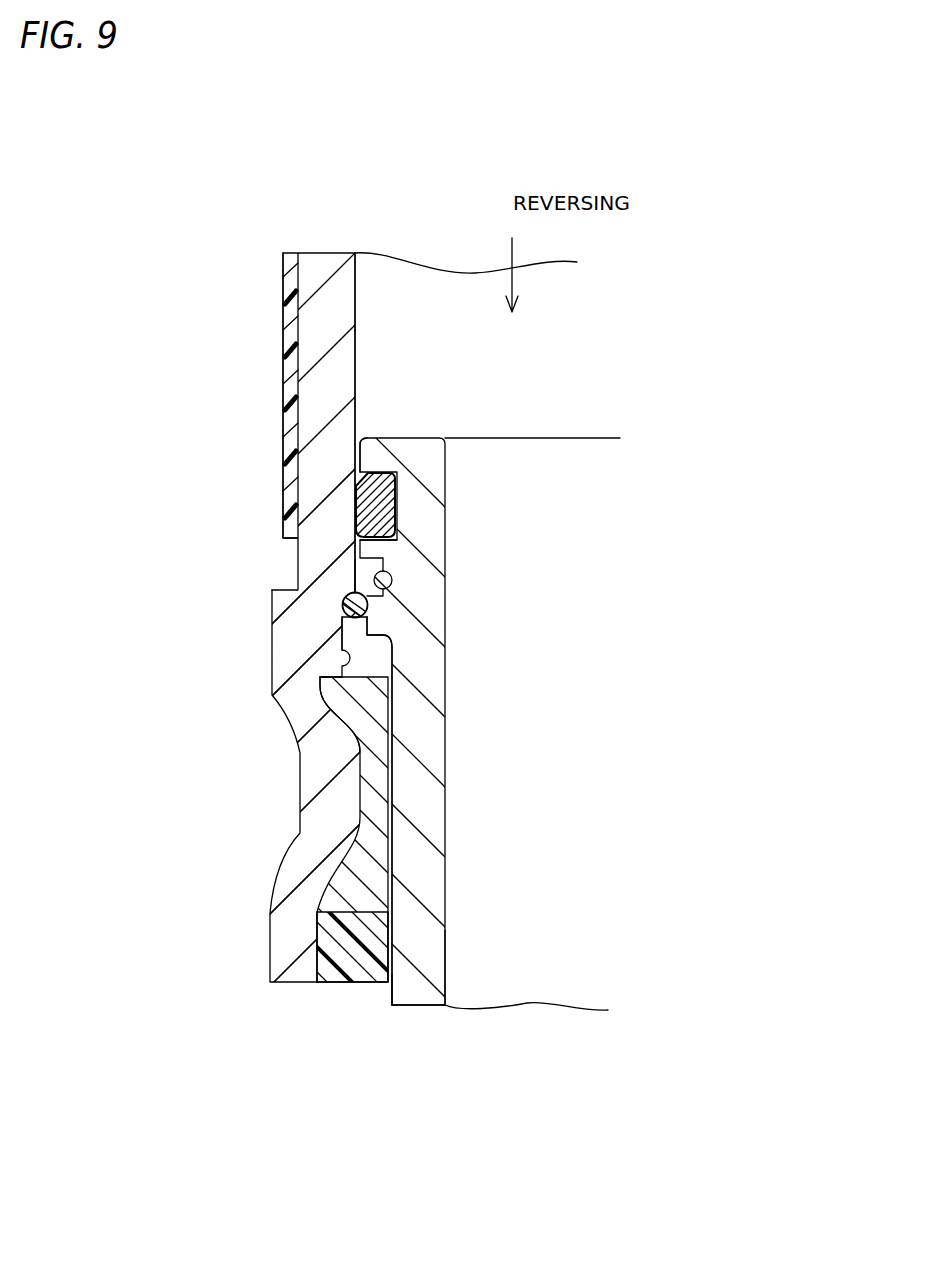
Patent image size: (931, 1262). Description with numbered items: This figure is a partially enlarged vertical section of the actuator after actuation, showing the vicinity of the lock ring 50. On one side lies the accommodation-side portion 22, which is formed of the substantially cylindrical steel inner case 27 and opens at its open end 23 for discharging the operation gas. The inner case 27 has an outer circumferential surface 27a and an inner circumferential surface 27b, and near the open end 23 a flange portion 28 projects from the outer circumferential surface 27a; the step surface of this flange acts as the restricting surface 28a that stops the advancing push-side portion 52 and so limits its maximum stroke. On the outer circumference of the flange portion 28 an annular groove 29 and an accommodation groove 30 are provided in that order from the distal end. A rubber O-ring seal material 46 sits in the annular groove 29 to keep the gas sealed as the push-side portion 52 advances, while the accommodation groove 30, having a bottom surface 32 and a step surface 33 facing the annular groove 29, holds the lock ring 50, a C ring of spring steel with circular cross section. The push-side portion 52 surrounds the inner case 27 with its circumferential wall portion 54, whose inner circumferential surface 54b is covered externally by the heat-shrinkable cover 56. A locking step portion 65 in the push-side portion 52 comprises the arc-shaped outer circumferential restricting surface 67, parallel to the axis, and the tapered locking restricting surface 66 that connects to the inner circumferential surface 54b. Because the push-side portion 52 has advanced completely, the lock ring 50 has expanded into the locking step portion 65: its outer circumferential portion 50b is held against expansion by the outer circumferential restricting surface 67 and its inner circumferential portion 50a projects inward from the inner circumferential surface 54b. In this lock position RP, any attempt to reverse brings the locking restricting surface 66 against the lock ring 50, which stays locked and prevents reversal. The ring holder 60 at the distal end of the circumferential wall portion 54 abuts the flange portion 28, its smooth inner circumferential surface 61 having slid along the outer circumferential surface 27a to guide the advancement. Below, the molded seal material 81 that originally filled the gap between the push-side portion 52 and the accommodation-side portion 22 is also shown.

The accommodation-side portion 22 is at (500, 1064).
The open end 23 is at (578, 450).
The inner case 27 is at (423, 980).
The outer circumferential surface 27a is at (389, 997).
The inner circumferential surface 27b is at (445, 955).
The flange portion 28 is at (341, 457).
The restricting surface 28a is at (387, 643).
The annular groove 29 is at (377, 447).
The accommodation groove 30 is at (575, 535).
The bottom surface 32 is at (386, 592).
The step surface 33 is at (398, 537).
The seal material 46 is at (398, 492).
The lock ring 50 is at (345, 605).
The inner circumferential portion 50a is at (366, 617).
The outer circumferential portion 50b is at (205, 623).
The push-side portion 52 is at (465, 631).
The circumferential wall portion 54 is at (320, 268).
The inner circumferential surface 54b is at (355, 307).
The cover 56 is at (287, 330).
The ring holder 60 is at (358, 860).
The inner circumferential surface 61 is at (393, 795).
The locking step portion 65 is at (130, 562).
The locking restricting surface 66 is at (346, 590).
The outer circumferential restricting surface 67 is at (345, 663).
The seal material 81 is at (337, 972).
The lock position RP is at (340, 560).